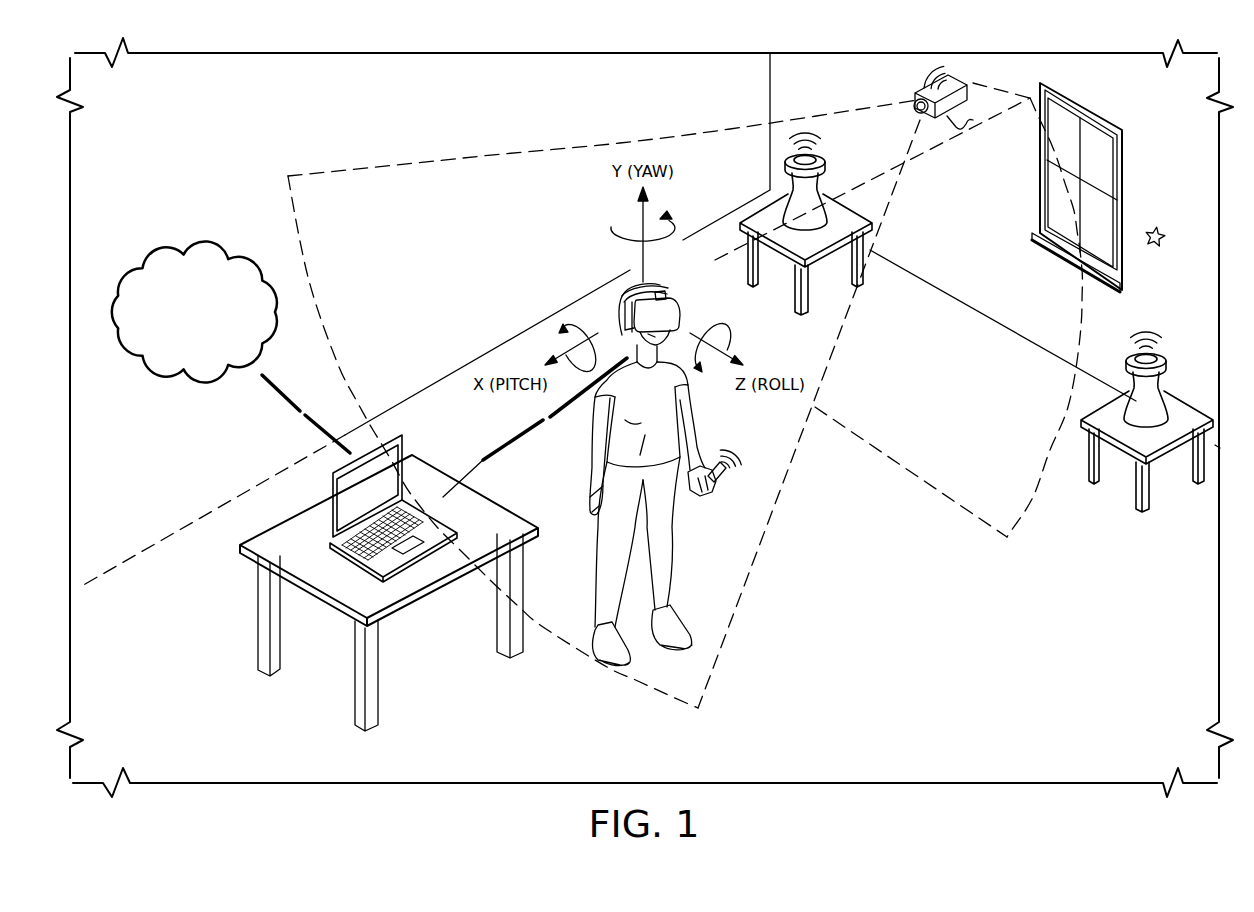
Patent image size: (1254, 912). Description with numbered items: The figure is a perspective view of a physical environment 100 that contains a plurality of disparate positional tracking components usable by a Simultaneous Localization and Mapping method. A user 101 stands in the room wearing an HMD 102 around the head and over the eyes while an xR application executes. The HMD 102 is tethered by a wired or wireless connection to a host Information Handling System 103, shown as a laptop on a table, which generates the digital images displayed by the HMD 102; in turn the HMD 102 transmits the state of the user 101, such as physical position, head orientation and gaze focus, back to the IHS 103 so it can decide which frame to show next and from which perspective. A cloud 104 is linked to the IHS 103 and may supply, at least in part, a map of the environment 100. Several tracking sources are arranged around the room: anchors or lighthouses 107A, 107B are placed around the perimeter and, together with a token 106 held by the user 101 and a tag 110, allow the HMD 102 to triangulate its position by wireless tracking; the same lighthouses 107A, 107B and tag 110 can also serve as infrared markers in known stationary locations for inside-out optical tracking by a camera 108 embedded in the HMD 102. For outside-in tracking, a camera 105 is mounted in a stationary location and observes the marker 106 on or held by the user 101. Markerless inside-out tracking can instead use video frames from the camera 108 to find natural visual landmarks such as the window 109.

The physical environment 100 is at (495, 48).
The user 101 is at (672, 530).
The HMD 102 is at (630, 290).
The Information Handling System (IHS) 103 is at (327, 493).
The cloud 104 is at (173, 349).
The camera 105 is at (973, 84).
The token 106 is at (721, 480).
The anchor or lighthouse 107A is at (827, 168).
The anchor or lighthouse 107B is at (1167, 366).
The camera 108 is at (665, 296).
The window 109 is at (1123, 173).
The tag 110 is at (1163, 231).